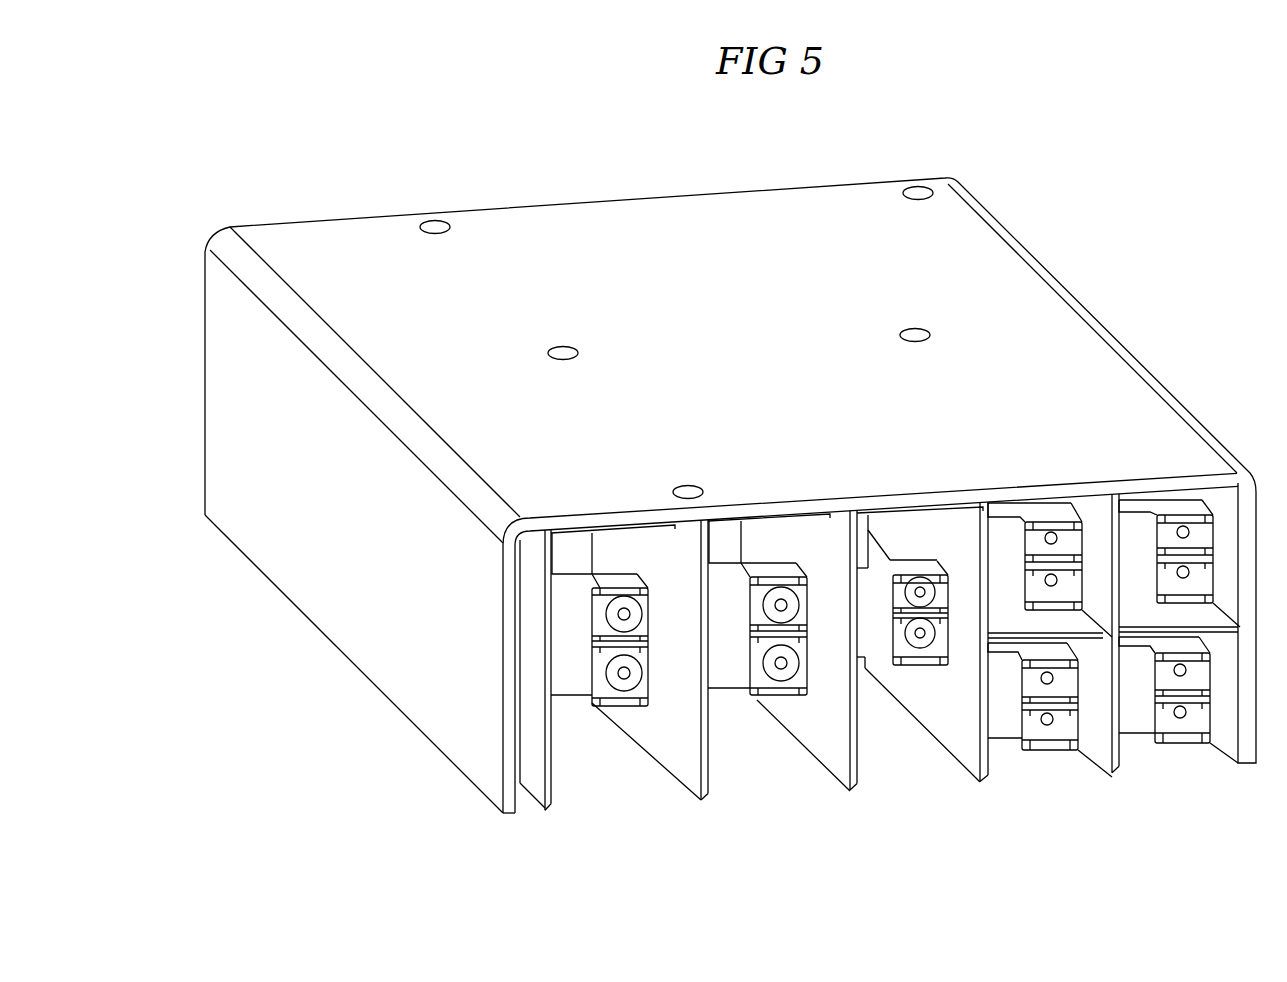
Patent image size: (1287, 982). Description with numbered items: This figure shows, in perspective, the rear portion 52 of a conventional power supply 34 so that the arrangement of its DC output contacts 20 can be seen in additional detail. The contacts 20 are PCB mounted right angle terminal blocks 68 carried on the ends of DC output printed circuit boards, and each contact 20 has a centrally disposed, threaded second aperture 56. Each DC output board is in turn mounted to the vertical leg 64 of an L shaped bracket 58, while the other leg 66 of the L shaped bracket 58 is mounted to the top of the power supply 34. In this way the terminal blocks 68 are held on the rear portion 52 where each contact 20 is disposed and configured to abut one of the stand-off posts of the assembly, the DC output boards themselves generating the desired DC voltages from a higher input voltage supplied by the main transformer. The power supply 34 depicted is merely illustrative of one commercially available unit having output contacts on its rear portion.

The power supply 34 is at (1067, 256).
The rear portion 52 is at (505, 815).
The L shaped bracket 58 is at (708, 778).
The vertical leg 64 is at (857, 768).
The other leg 66 is at (752, 512).
The right angle terminal block 68 is at (603, 580).
The second aperture 56 is at (918, 614).
The DC output contact 20 is at (780, 683).